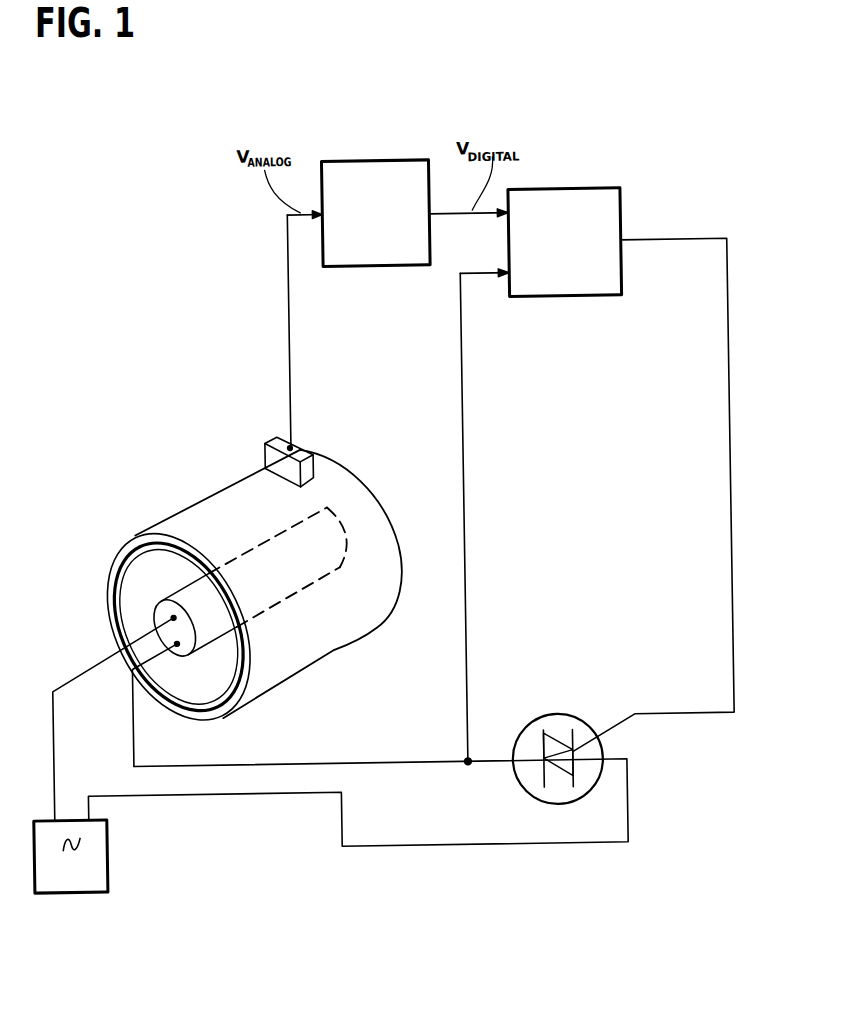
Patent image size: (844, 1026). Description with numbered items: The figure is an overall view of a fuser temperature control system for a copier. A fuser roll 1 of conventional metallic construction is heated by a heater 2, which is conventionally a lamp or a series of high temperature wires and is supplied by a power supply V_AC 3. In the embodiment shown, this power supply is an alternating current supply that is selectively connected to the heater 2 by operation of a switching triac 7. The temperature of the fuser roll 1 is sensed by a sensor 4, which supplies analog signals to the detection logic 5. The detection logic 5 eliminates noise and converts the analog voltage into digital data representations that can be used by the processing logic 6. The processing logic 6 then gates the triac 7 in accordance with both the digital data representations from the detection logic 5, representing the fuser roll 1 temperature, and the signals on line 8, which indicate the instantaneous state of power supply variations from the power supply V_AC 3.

The fuser roll 1 is at (217, 498).
The heater 2 is at (175, 641).
The power supply V_AC 3 is at (102, 845).
The sensor 4 is at (292, 445).
The detection logic 5 is at (385, 161).
The processing logic 6 is at (576, 192).
The switching triac 7 is at (530, 722).
The line 8 is at (466, 423).